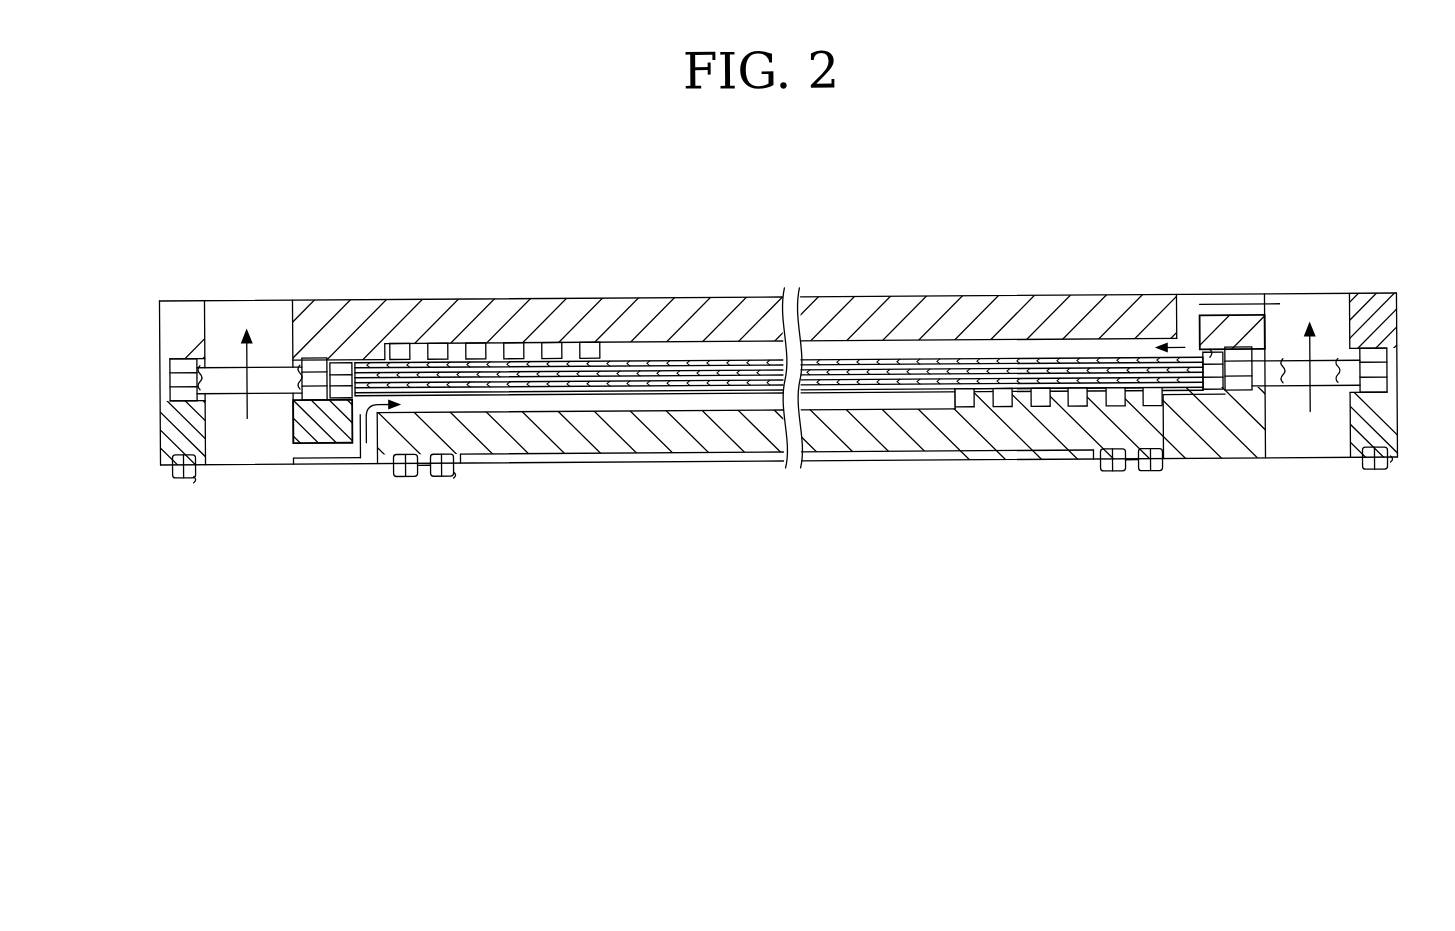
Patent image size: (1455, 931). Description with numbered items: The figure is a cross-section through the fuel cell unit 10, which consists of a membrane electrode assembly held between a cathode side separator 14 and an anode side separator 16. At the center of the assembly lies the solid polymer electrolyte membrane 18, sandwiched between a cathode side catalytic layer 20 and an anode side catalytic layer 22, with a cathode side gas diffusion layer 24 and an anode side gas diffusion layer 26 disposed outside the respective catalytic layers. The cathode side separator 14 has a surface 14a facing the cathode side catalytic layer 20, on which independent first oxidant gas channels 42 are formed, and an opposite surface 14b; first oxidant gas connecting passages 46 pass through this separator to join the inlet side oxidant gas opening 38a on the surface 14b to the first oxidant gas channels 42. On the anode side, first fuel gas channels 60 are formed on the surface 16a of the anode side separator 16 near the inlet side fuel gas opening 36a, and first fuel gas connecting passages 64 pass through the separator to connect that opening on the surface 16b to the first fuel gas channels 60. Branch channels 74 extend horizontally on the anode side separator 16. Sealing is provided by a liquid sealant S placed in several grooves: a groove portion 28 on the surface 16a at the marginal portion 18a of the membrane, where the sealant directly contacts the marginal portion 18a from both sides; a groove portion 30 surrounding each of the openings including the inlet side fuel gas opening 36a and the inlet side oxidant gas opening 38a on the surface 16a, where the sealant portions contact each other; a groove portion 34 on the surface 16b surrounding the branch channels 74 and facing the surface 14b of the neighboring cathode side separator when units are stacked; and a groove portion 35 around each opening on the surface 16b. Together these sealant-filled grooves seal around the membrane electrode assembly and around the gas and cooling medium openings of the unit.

The fuel cell unit 10 is at (972, 168).
The cathode side separator 14 is at (996, 290).
The surface of the cathode side separator 14a is at (500, 372).
The surface opposite the surface 14a 14b is at (942, 296).
The anode side separator 16 is at (942, 470).
The surface of the anode side separator 16a is at (866, 405).
The surface of the anode side separator 16b is at (390, 472).
The solid polymer electrolyte membrane 18 is at (640, 345).
The marginal portion 18a is at (362, 420).
The cathode side catalytic layer 20 is at (413, 345).
The anode side catalytic layer 22 is at (712, 383).
The cathode side gas diffusion layer 24 is at (382, 372).
The anode side gas diffusion layer 26 is at (662, 392).
The groove portion 28 is at (312, 355).
The groove portion 30 is at (170, 370).
The groove portion 34 is at (442, 476).
The groove portion 35 is at (183, 476).
The inlet side fuel gas opening 36a is at (245, 300).
The inlet side oxidant gas opening 38a is at (1323, 440).
The first oxidant gas channels 42 is at (862, 340).
The first oxidant gas connecting passages 46 is at (1215, 300).
The first fuel gas channels 60 is at (612, 405).
The first fuel gas connecting passages 64 is at (318, 452).
The branch channels 74 is at (755, 458).
The liquid sealant S is at (200, 362).